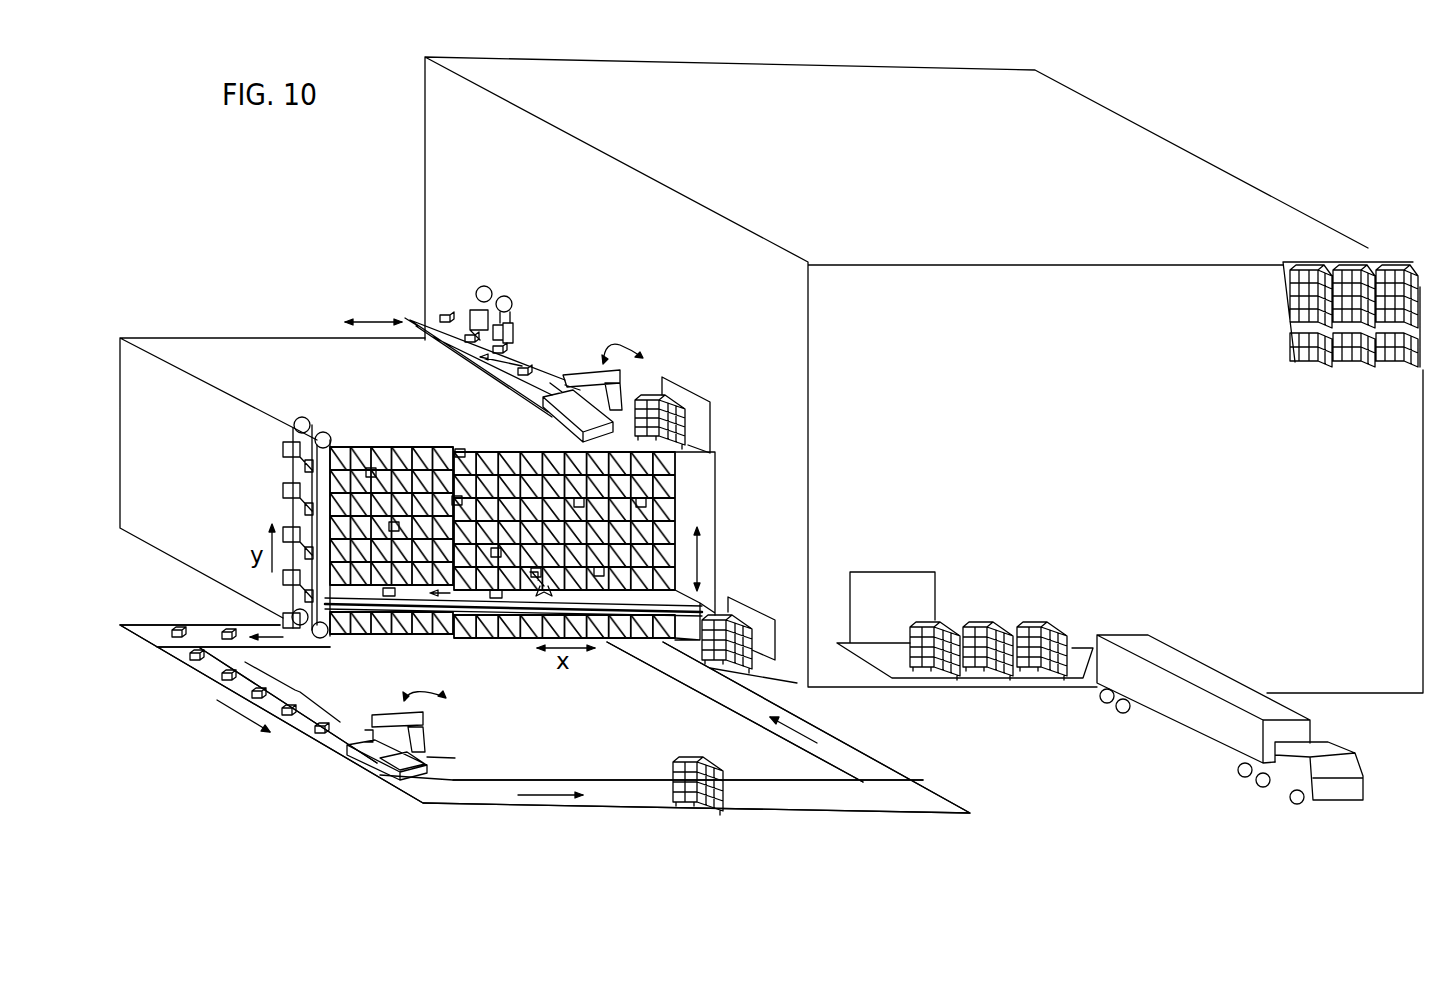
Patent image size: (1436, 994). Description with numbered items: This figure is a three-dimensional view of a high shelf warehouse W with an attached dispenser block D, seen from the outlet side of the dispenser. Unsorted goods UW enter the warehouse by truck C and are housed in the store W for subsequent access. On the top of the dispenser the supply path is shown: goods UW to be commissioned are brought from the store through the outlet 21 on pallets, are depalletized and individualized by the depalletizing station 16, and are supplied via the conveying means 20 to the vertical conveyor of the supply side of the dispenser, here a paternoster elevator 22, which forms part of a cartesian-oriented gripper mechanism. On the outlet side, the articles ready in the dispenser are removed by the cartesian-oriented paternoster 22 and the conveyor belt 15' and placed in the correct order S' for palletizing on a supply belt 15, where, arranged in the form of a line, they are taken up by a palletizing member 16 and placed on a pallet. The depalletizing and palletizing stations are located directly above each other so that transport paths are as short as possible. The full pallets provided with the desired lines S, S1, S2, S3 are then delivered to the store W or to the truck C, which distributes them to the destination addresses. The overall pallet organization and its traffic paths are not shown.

The dispenser block D is at (249, 336).
The paternoster elevator 22 is at (318, 421).
The conveyor belt 20 is at (530, 356).
The depalletizing device 16 is at (578, 366).
The unsorted goods UW is at (672, 395).
The opening 21 is at (705, 429).
The supply belt 15 is at (545, 690).
The conveyor belt 15' is at (513, 627).
The line S is at (723, 690).
The correct order S' is at (256, 680).
The line S1 is at (947, 618).
The line S2 is at (995, 618).
The line S3 is at (1040, 618).
The truck C is at (1220, 680).
The high shelf warehouse W is at (1313, 360).